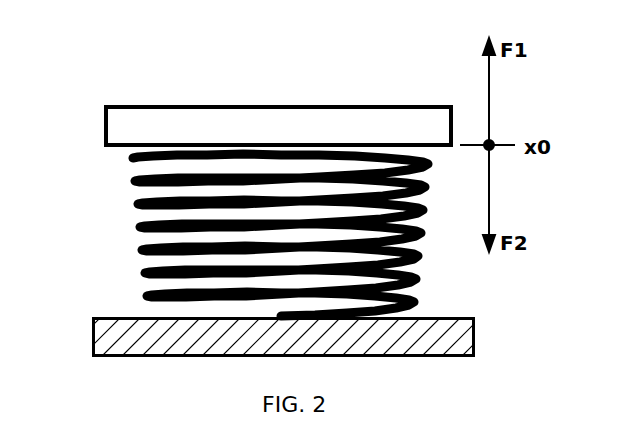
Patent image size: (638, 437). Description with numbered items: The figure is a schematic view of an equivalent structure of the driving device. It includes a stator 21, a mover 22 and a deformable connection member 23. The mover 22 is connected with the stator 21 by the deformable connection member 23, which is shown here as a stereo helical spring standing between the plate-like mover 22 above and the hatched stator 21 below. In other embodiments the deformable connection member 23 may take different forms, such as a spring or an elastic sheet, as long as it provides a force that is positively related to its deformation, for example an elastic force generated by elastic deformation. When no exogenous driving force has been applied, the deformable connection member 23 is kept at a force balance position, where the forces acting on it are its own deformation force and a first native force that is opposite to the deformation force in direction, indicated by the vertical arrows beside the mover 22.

The stator 21 is at (117, 317).
The mover 22 is at (269, 127).
The deformable connection member 23 is at (147, 230).